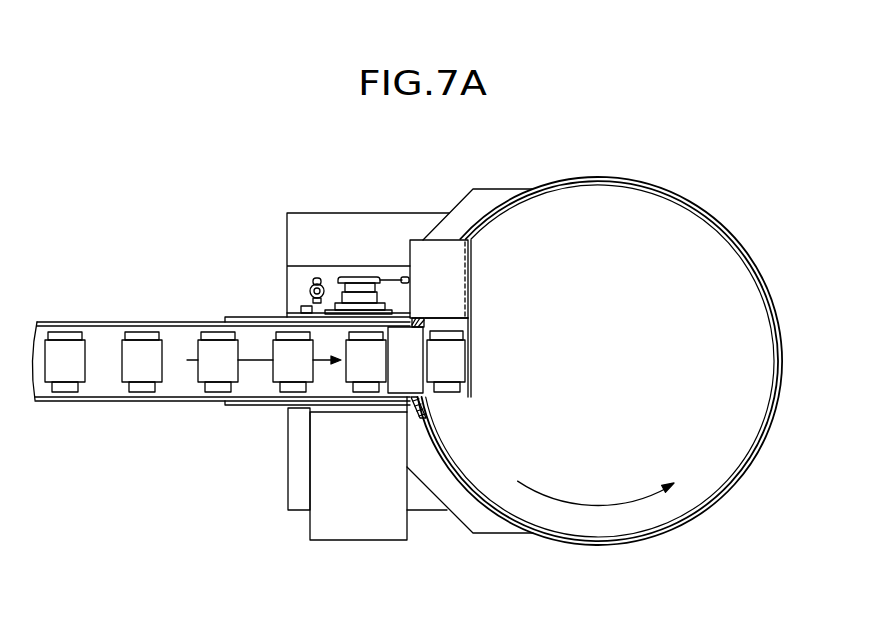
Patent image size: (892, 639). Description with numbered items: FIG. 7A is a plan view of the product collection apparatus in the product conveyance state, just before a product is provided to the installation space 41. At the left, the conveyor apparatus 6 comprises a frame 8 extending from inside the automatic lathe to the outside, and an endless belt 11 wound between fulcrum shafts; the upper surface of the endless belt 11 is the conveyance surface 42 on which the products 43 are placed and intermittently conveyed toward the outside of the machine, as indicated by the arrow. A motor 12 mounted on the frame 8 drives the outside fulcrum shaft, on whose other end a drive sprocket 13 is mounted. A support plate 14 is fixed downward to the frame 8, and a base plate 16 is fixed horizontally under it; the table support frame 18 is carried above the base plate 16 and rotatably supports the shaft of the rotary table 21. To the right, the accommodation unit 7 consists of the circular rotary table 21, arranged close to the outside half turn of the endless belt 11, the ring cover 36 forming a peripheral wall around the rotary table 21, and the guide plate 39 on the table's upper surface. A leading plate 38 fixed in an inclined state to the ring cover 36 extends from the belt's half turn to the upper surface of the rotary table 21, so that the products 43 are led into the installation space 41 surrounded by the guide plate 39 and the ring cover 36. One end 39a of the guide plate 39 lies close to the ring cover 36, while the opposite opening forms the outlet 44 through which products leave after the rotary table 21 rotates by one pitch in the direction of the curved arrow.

The conveyor apparatus 6 is at (221, 337).
The accommodation unit 7 is at (604, 325).
The frame 8 is at (152, 401).
The endless belt 11 is at (94, 372).
The motor 12 is at (352, 524).
The drive sprocket 13 is at (358, 276).
The support plate 14 is at (293, 292).
The base plate 16 is at (302, 222).
The table support frame 18 is at (493, 192).
The rotary table 21 is at (700, 458).
The ring cover 36 is at (726, 222).
The leading plate 38 is at (392, 312).
The guide plate 39 is at (466, 348).
The one end of the guide plate 39a is at (469, 237).
The installation space 41 is at (462, 323).
The conveyance surface 42 is at (98, 340).
The products 43 is at (66, 390).
The outlet 44 is at (467, 403).